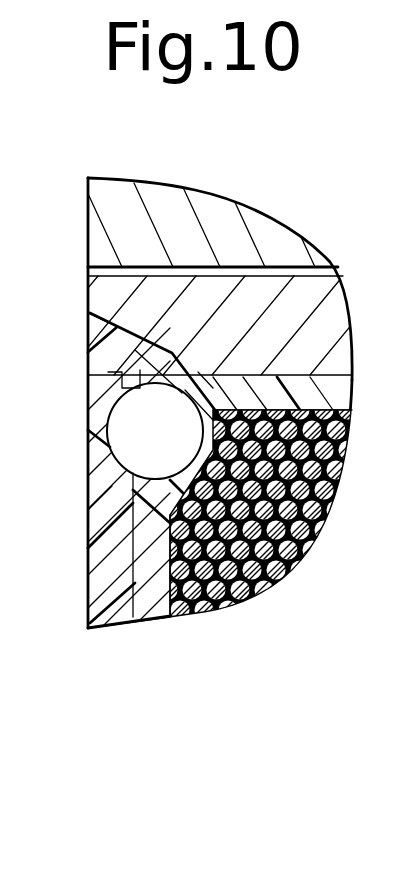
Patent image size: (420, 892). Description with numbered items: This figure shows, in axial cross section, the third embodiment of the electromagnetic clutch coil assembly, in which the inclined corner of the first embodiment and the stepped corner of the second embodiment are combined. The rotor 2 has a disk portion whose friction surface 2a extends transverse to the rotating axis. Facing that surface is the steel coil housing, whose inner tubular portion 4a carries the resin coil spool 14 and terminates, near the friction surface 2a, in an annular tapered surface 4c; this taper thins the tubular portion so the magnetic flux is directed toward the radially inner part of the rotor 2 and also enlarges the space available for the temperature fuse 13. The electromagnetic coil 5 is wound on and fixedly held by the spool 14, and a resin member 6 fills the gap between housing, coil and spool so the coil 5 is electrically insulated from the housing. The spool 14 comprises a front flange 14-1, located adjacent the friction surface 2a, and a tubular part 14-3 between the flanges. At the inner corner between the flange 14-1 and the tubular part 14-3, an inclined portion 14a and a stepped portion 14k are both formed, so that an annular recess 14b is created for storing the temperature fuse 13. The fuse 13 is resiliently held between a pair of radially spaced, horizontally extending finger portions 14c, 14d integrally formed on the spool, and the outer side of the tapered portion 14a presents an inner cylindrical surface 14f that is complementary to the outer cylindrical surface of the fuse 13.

The rotor 2 is at (212, 233).
The friction surface 2a is at (87, 223).
The inner tubular portion 4a is at (310, 345).
The annular tapered surface 4c is at (120, 333).
The electromagnetic coil 5 is at (310, 532).
The resin member 6 is at (97, 605).
The temperature fuse 13 is at (124, 428).
The coil spool 14 is at (145, 625).
The flange 14-1 is at (160, 590).
The tubular part 14-3 is at (318, 380).
The tapered portion 14a is at (88, 592).
The annular recess 14b is at (186, 440).
The finger portion 14c is at (110, 372).
The finger portion 14d is at (88, 510).
The inner cylindrical surface 14f is at (190, 360).
The stepped portion 14k is at (88, 548).